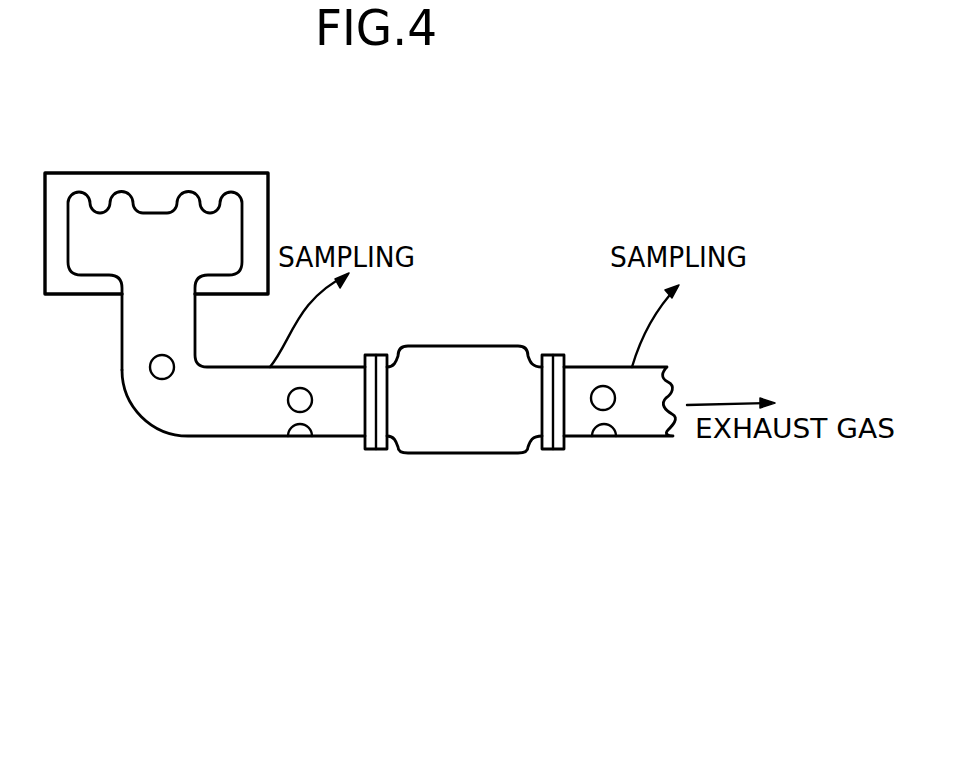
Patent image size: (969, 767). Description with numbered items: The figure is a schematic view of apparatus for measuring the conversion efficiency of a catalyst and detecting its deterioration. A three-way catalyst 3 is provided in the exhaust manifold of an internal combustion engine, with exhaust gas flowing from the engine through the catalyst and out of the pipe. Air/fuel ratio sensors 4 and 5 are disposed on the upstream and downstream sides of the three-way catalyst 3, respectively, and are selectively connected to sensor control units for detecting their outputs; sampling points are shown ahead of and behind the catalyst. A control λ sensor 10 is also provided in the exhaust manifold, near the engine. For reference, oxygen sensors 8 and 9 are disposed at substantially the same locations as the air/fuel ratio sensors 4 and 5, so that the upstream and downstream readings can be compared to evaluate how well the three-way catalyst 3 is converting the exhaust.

The three-way catalyst 3 is at (445, 364).
The air/fuel ratio sensor 4 is at (302, 394).
The air/fuel ratio sensor 5 is at (603, 386).
The oxygen sensor 8 is at (295, 432).
The oxygen sensor 9 is at (603, 438).
The control λ sensor 10 is at (151, 371).